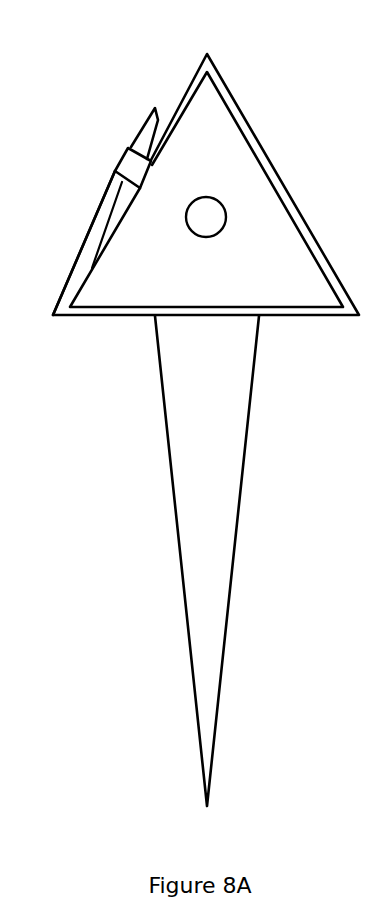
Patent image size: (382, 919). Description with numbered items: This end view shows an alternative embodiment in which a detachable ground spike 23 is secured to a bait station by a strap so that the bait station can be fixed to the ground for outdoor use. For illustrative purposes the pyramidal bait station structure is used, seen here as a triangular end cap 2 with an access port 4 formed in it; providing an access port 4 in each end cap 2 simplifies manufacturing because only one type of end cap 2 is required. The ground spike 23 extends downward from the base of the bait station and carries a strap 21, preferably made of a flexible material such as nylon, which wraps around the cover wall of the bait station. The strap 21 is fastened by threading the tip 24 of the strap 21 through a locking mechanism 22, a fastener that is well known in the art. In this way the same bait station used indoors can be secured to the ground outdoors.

The end cap 2 is at (223, 140).
The access port 4 is at (204, 223).
The strap 21 is at (87, 248).
The locking mechanism 22 is at (128, 160).
The ground spike 23 is at (187, 416).
The tip of strap 24 is at (142, 120).